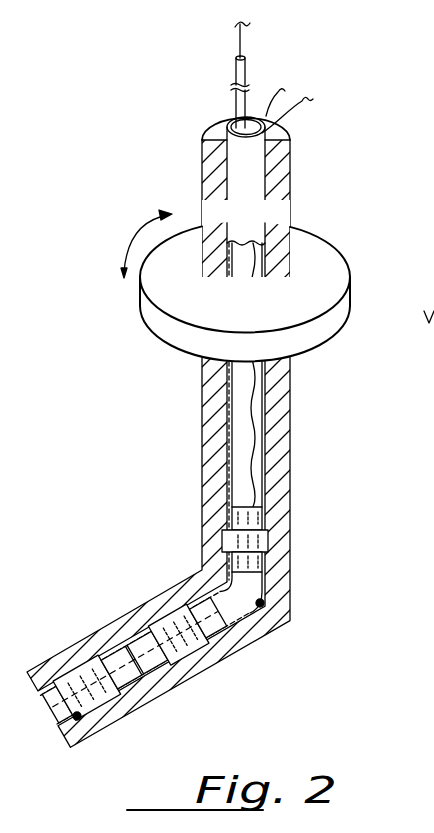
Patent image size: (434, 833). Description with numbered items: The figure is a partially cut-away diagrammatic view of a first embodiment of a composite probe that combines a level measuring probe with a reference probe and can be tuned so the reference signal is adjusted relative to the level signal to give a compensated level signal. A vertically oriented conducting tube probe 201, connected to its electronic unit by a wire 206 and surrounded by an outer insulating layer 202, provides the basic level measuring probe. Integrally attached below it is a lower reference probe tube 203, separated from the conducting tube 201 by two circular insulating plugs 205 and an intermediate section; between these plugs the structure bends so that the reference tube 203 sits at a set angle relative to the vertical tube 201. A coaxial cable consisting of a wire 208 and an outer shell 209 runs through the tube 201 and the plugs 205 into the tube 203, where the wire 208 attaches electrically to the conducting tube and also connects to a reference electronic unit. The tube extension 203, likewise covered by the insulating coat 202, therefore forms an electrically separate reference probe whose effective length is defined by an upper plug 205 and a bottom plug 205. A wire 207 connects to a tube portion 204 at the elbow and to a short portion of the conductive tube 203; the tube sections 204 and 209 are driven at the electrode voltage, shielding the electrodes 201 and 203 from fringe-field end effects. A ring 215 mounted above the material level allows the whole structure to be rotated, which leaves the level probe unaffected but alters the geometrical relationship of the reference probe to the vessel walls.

The conducting tube probe 201 is at (228, 177).
The outer insulating layer 202 is at (278, 196).
The lower reference probe tube 203 is at (163, 670).
The tube portion 204 is at (262, 607).
The circular insulating plug 205 is at (223, 540).
The wire 206 is at (311, 104).
The wire 207 is at (268, 113).
The wire 208 is at (242, 38).
The outer shell 209 is at (245, 68).
The ring 215 is at (153, 320).